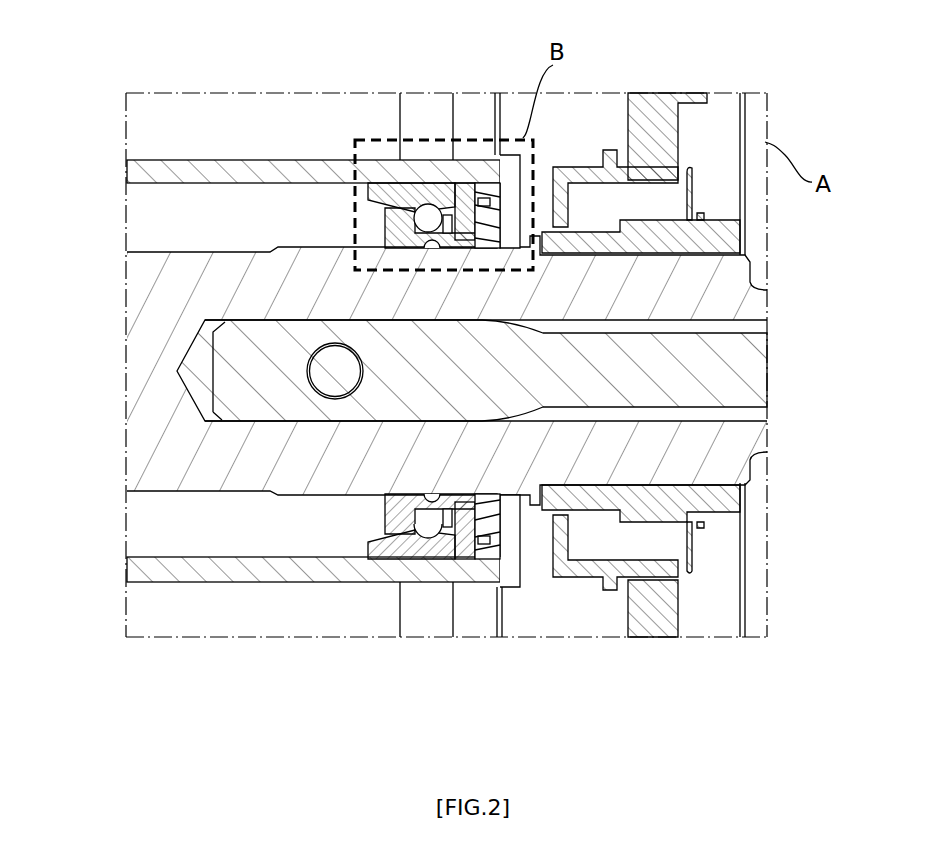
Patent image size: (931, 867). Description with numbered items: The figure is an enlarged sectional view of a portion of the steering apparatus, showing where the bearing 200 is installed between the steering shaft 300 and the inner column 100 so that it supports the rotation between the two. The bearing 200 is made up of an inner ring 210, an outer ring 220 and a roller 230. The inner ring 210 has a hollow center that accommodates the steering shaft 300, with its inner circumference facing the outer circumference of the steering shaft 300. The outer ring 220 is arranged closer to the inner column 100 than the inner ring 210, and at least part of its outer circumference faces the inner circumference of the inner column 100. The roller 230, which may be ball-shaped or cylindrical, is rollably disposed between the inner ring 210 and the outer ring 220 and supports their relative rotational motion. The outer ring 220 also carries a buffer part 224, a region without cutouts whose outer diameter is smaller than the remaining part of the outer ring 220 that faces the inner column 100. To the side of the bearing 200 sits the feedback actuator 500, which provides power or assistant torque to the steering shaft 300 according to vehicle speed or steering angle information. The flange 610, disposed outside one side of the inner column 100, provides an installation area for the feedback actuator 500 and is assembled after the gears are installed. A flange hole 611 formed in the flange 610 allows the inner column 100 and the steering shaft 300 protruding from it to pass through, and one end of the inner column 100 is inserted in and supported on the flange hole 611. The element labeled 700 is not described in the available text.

The inner column 100 is at (155, 172).
The bearing 200 is at (355, 145).
The inner ring 210 is at (380, 224).
The outer ring 220 is at (390, 188).
The buffer part 224 is at (450, 182).
The roller 230 is at (428, 196).
The steering shaft 300 is at (155, 453).
The feedback actuator 500 is at (597, 112).
The flange 610 is at (428, 612).
The flange hole 611 is at (435, 584).
The piston rod 700 is at (732, 367).